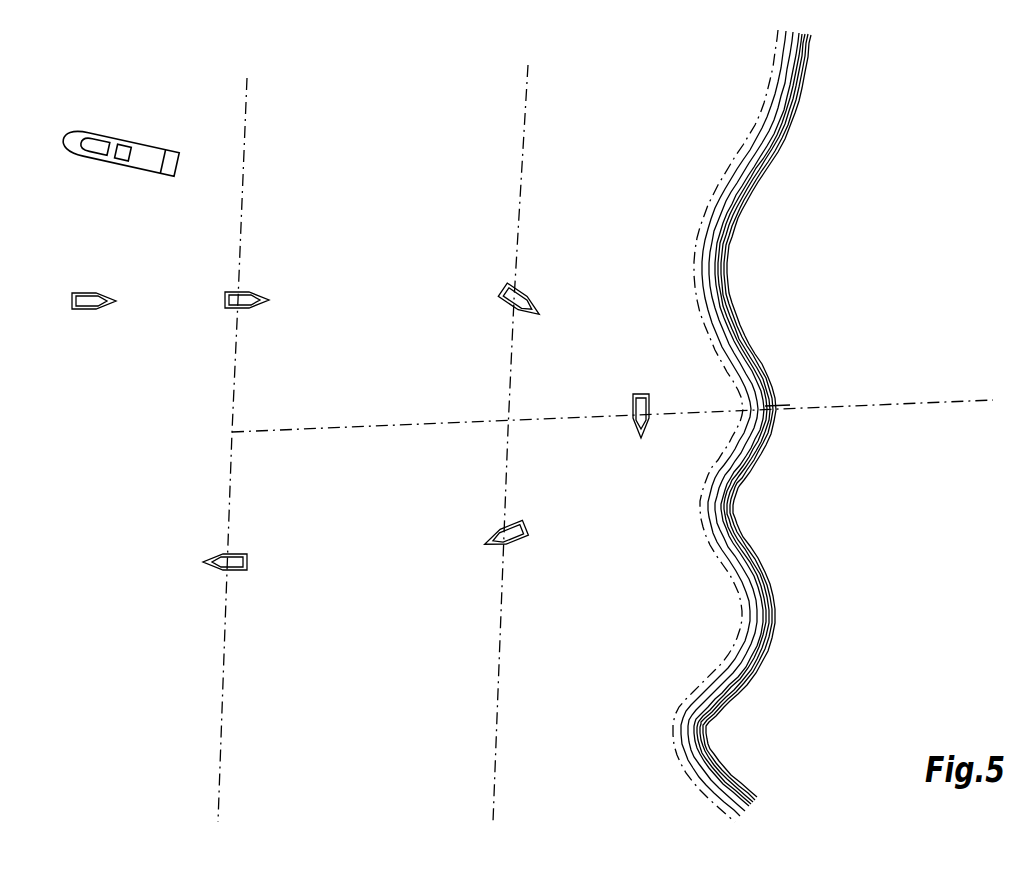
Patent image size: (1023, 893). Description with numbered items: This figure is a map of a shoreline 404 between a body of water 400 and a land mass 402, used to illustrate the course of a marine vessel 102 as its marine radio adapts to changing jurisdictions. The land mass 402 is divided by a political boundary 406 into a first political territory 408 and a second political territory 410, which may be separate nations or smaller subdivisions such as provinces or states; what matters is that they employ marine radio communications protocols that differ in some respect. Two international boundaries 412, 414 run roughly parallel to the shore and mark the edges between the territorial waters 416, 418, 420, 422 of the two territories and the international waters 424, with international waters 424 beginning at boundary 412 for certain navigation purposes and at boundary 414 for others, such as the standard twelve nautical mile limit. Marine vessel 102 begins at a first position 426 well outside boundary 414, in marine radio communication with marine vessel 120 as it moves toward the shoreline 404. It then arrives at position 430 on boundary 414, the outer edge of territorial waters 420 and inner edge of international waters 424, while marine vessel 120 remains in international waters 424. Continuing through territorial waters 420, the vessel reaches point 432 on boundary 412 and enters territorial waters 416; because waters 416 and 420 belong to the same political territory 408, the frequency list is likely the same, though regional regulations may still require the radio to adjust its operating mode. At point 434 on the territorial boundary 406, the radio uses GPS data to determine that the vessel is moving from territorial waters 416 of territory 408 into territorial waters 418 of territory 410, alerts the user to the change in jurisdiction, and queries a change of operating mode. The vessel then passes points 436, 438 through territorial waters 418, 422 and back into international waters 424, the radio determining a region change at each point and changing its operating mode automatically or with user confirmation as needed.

The marine vessel 102 is at (378, 432).
The marine vessel 120 is at (120, 144).
The body of water 400 is at (573, 468).
The land mass 402 is at (923, 386).
The shoreline 404 is at (742, 426).
The political boundary 406 is at (800, 395).
The first political territory 408 is at (908, 207).
The second political territory 410 is at (923, 610).
The international boundary 412 is at (506, 443).
The international boundary 414 is at (228, 450).
The territorial waters 416 is at (645, 224).
The territorial waters 418 is at (635, 627).
The territorial waters 420 is at (380, 232).
The territorial waters 422 is at (370, 639).
The international waters 424 is at (125, 457).
The first position 426 is at (92, 289).
The position 430 is at (244, 287).
The point 432 is at (520, 295).
The point 434 is at (660, 416).
The point 436 is at (510, 546).
The point 438 is at (227, 575).